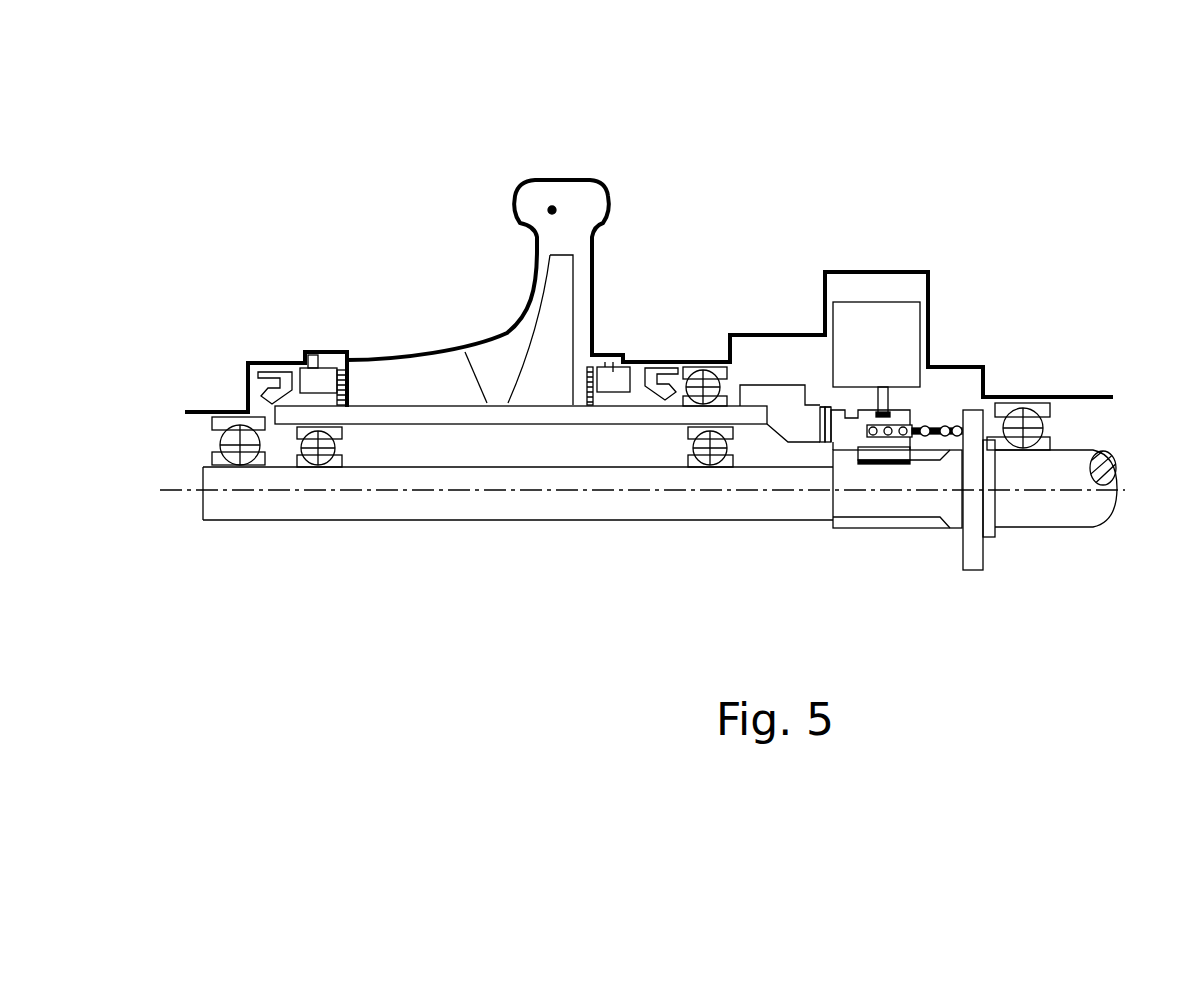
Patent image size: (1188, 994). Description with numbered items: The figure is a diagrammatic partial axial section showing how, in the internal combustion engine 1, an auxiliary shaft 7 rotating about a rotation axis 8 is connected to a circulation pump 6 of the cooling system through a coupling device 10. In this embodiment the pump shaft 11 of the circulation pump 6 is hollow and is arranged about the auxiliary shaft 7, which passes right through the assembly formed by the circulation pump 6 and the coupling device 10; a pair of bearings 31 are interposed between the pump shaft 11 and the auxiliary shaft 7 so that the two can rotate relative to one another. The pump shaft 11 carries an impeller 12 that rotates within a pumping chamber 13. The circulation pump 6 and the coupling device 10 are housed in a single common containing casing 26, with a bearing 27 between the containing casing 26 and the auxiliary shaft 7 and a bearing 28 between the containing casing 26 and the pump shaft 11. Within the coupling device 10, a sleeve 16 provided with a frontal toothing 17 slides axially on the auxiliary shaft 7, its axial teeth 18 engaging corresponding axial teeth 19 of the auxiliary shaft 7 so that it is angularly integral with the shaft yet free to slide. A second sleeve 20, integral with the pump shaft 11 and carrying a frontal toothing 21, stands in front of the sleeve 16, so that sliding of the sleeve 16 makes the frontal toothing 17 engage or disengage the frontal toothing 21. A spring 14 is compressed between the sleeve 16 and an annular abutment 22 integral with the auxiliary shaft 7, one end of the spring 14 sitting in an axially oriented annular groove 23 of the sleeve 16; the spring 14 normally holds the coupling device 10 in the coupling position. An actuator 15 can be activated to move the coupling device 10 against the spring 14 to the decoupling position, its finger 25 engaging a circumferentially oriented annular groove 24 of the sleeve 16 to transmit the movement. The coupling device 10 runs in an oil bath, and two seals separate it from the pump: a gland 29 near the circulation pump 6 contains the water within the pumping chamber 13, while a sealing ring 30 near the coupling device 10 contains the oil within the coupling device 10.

The internal combustion engine 1 is at (1060, 673).
The circulation pump 6 is at (495, 137).
The auxiliary shaft 7 is at (578, 505).
The rotation axis 8 is at (167, 490).
The coupling device 10 is at (908, 235).
The pump shaft 11 is at (395, 417).
The impeller 12 is at (563, 357).
The pumping chamber 13 is at (553, 207).
The spring 14 is at (950, 433).
The actuator 15 is at (855, 312).
The sleeve 16 is at (855, 433).
The frontal toothing 17 is at (823, 407).
The axial teeth 18 is at (897, 523).
The axial teeth 19 is at (853, 447).
The sleeve 20 is at (772, 395).
The frontal toothing 21 is at (830, 420).
The annular abutment 22 is at (977, 547).
The axially oriented annular groove 23 is at (900, 430).
The circumferentially oriented annular groove 24 is at (875, 455).
The finger 25 is at (885, 405).
The containing casing 26 is at (1100, 397).
The bearing 27 is at (236, 437).
The bearing 28 is at (703, 377).
The gland 29 is at (322, 380).
The sealing ring 30 is at (273, 392).
The bearings 31 is at (320, 463).